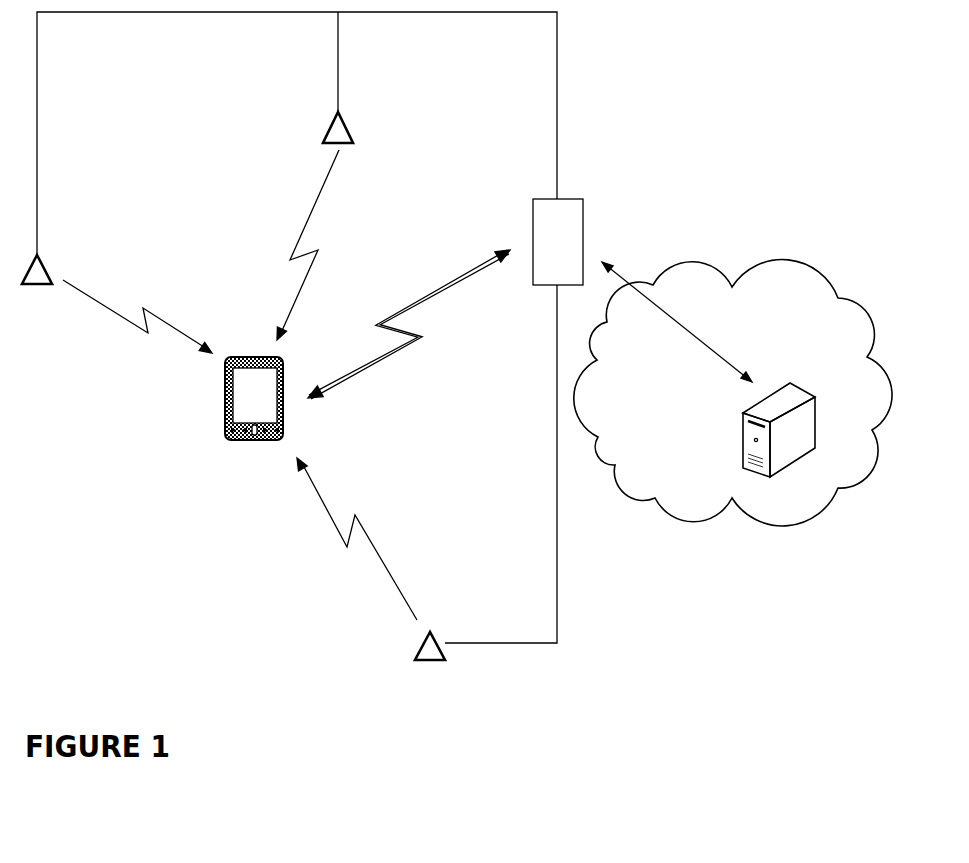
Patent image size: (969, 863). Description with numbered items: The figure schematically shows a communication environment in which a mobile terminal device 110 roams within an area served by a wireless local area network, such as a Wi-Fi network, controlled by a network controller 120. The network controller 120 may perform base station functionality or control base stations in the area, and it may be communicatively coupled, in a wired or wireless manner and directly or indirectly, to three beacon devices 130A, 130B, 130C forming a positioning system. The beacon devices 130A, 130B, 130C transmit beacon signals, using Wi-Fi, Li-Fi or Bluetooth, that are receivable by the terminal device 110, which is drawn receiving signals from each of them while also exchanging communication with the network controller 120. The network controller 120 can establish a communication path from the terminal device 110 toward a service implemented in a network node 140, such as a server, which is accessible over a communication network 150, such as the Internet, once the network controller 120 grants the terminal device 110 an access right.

The mobile terminal device 110 is at (228, 443).
The network controller 120 is at (583, 210).
The beacon device 130A is at (50, 272).
The beacon device 130B is at (330, 125).
The beacon device 130C is at (421, 665).
The network node 140 is at (795, 395).
The communication network 150 is at (785, 513).